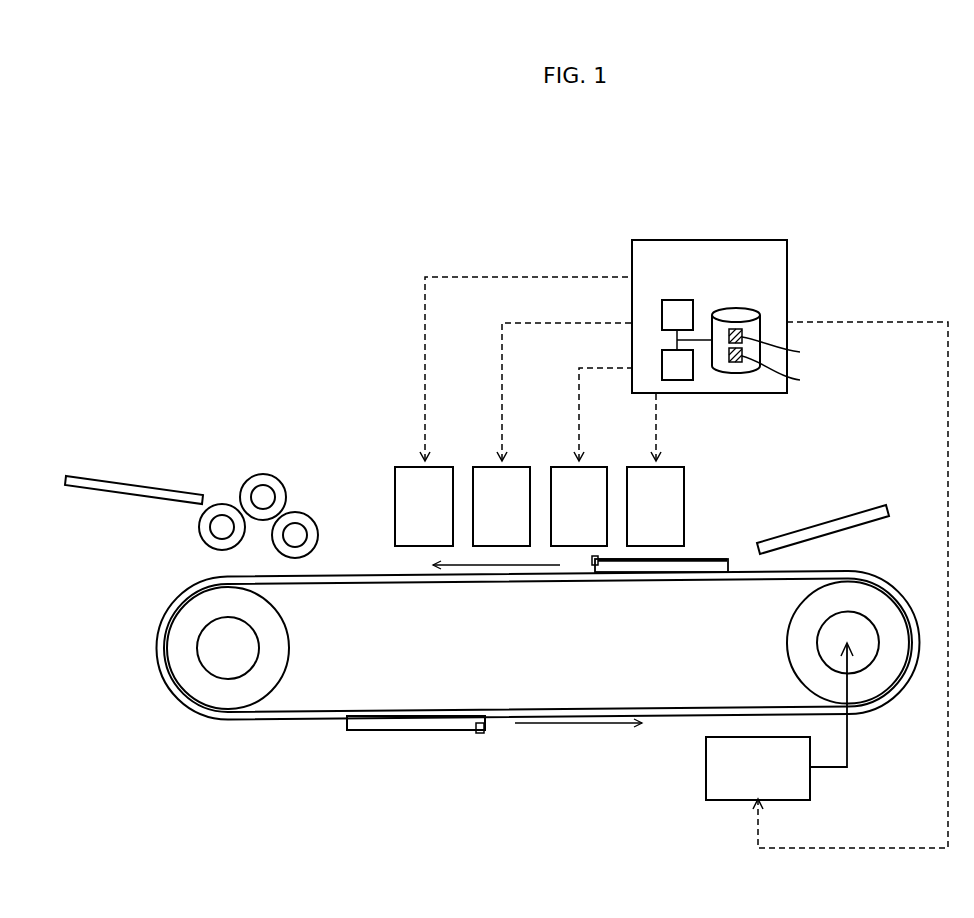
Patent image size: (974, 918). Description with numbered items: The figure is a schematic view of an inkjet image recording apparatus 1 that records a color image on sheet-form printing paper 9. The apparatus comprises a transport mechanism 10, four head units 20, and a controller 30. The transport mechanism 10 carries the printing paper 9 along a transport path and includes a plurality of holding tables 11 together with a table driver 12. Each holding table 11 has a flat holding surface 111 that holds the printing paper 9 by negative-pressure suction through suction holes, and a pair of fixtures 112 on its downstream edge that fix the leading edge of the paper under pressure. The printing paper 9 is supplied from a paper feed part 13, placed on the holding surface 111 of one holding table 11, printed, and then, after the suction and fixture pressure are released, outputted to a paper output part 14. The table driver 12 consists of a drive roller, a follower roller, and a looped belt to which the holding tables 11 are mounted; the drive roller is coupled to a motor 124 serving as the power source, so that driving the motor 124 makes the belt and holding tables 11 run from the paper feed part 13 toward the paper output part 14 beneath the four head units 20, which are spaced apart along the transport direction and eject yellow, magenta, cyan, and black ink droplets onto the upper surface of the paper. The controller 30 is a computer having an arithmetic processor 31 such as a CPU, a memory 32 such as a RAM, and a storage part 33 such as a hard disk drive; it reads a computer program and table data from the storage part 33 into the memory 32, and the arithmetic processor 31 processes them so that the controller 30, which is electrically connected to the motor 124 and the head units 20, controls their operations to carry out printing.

The image recording apparatus 1 is at (305, 340).
The printing paper 9 is at (695, 557).
The transport mechanism 10 is at (303, 748).
The holding table 11 is at (498, 671).
The table driver 12 is at (512, 640).
The paper feed part 13 is at (816, 510).
The paper output part 14 is at (186, 476).
The head unit 20 is at (545, 484).
The controller 30 is at (704, 283).
The arithmetic processor 31 is at (662, 316).
The memory 32 is at (662, 365).
The storage part 33 is at (742, 315).
The holding surface 111 is at (410, 731).
The fixture 112 is at (594, 563).
The motor 124 is at (706, 768).